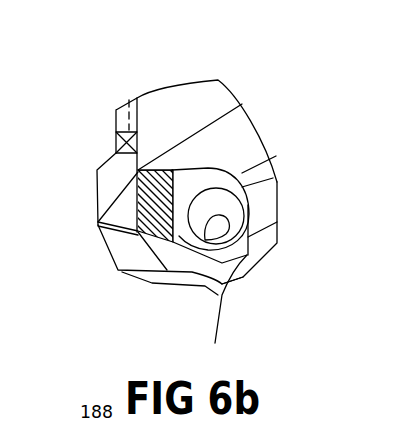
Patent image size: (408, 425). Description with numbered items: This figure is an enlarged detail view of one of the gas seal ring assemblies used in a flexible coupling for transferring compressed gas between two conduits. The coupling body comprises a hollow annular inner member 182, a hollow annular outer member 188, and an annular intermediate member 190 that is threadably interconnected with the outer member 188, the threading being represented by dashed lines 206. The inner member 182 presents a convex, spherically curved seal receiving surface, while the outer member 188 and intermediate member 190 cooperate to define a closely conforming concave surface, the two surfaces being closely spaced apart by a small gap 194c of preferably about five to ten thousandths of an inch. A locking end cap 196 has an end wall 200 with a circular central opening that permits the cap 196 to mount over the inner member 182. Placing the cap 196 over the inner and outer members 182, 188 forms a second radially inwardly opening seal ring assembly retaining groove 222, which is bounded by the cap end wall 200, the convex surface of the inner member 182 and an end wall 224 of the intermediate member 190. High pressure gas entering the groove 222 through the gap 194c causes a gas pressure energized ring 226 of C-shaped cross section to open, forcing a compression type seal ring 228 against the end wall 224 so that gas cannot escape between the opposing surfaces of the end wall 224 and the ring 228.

The hollow annular inner member 182 is at (112, 279).
The hollow annular outer member 188 is at (109, 105).
The annular intermediate member 190 is at (106, 189).
The gap 194c is at (97, 221).
The end cap 196 is at (268, 113).
The end wall 200 is at (278, 195).
The dashed lines 206 is at (127, 100).
The seal ring assembly retaining groove 222 is at (217, 315).
The end wall 224 is at (140, 170).
The gas pressure energized ring 226 is at (203, 244).
The compression type seal ring 228 is at (273, 173).